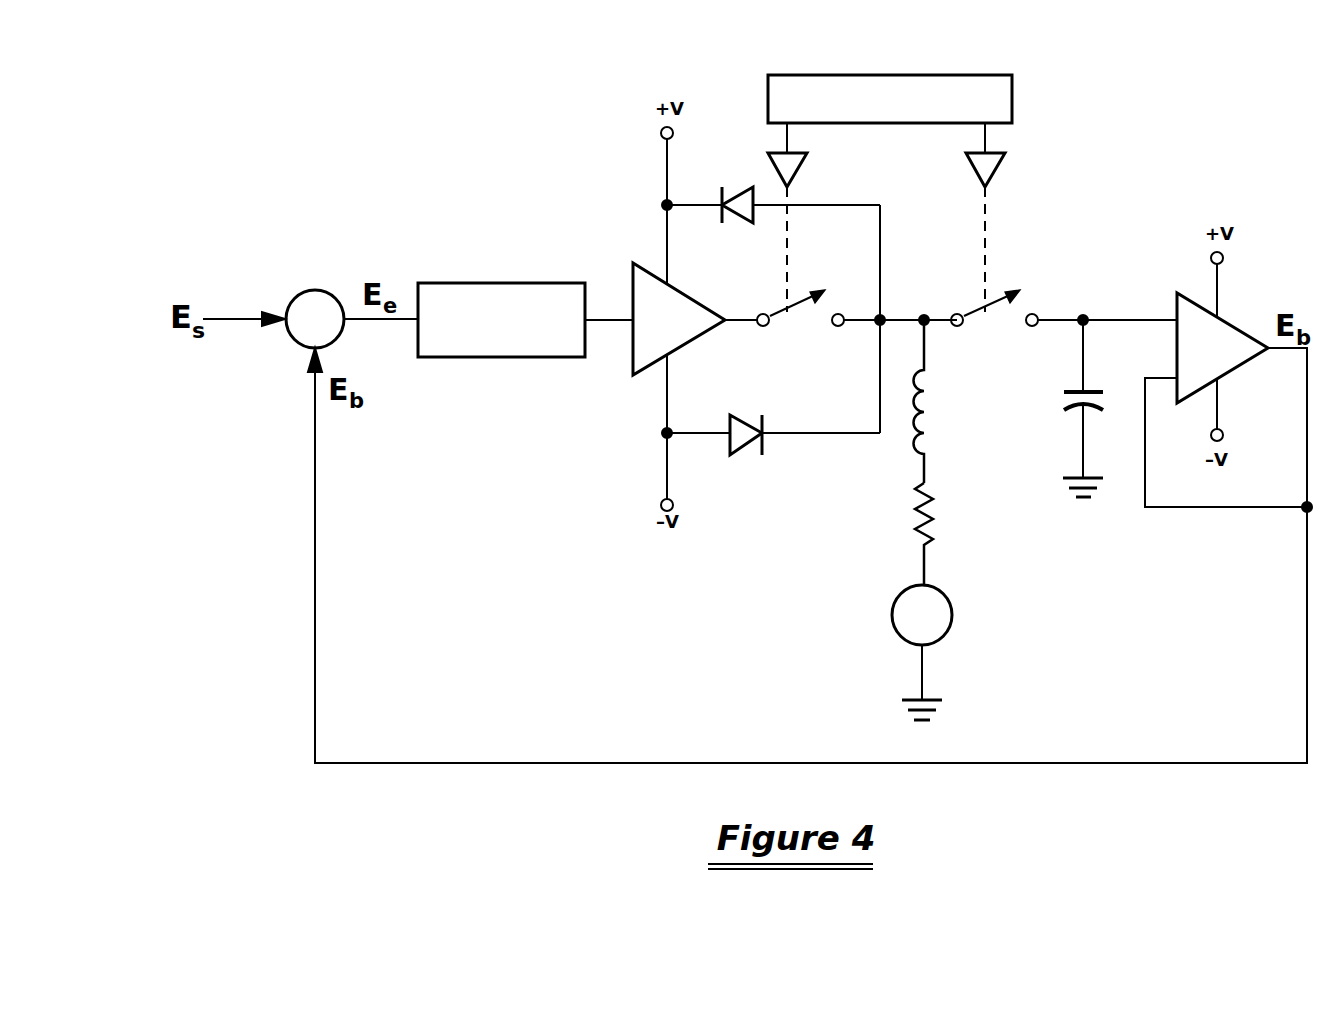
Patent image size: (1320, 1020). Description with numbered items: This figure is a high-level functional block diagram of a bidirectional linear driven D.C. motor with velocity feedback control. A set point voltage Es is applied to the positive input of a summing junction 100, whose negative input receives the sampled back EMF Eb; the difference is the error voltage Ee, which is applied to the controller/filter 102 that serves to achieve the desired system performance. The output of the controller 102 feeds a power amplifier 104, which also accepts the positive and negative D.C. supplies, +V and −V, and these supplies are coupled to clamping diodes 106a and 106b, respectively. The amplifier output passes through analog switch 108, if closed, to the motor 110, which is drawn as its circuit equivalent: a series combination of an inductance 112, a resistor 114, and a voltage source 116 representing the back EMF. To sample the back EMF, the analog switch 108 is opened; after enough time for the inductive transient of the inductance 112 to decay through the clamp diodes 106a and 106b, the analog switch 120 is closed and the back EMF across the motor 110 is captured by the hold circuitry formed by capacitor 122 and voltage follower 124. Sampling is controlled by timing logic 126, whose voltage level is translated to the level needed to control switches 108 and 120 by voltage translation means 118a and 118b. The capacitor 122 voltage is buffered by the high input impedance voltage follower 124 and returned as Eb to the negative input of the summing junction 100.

The summing junction 100 is at (312, 289).
The controller/filter 102 is at (447, 358).
The power amplifier 104 is at (633, 362).
The clamping diode 106a is at (743, 187).
The clamping diode 106b is at (743, 455).
The analog switch 108 is at (800, 330).
The motor 110 is at (905, 539).
The inductance (Lm) 112 is at (923, 412).
The resistor (Rm) 114 is at (930, 513).
The voltage source (VB) 116 is at (952, 607).
The voltage translation means 118a is at (803, 172).
The voltage translation means 118b is at (1003, 167).
The analog switch 120 is at (993, 322).
The capacitor 122 is at (1098, 387).
The voltage follower 124 is at (1235, 325).
The timing logic 126 is at (993, 75).